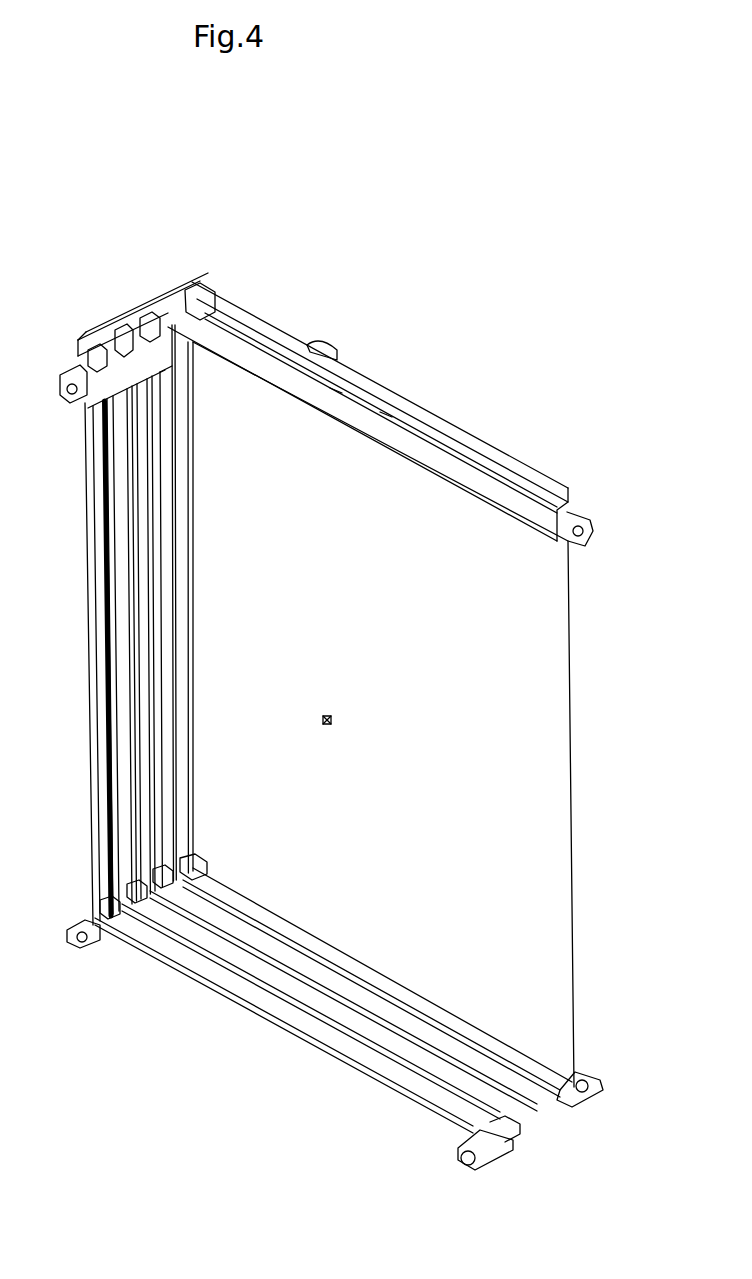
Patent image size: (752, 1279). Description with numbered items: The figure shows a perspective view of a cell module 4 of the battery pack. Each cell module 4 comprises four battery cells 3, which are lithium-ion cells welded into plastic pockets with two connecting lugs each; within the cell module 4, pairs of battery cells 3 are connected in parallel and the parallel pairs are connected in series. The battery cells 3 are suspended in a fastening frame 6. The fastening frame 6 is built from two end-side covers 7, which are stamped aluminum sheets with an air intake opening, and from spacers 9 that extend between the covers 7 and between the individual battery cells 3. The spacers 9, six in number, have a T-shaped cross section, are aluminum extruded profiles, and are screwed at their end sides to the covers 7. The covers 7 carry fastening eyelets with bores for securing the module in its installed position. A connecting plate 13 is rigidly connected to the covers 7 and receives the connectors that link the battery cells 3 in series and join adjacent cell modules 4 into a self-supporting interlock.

The cell module 4 is at (356, 252).
The battery cell 3 is at (140, 447).
The connecting plate 13 is at (502, 455).
The end-side cover 7 is at (122, 325).
The fastening frame 6 is at (180, 318).
The spacer 9 is at (297, 1018).